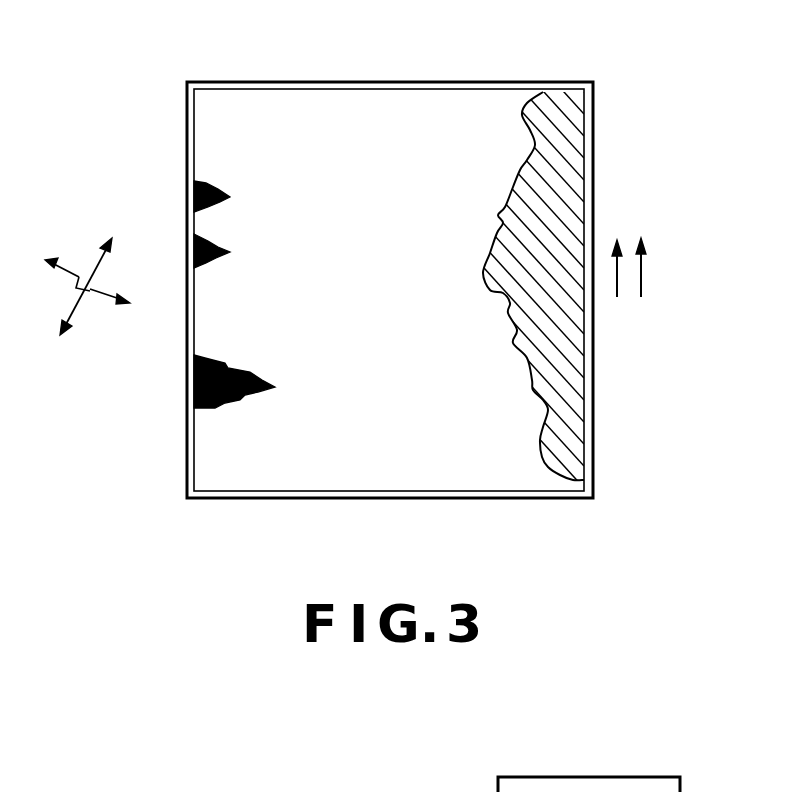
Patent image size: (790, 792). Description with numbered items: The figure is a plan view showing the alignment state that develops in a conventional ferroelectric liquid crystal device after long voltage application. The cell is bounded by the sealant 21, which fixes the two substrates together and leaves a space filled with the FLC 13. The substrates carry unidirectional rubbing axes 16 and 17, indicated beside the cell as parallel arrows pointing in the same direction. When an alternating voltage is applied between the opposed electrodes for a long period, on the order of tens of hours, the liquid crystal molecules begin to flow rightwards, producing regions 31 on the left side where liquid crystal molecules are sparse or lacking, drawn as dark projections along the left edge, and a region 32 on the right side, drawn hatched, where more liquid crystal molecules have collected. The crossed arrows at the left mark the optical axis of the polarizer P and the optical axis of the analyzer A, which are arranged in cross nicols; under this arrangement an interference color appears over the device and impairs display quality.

The FLC 13 is at (313, 112).
The sealant 21 is at (409, 88).
The regions with less or lacking liquid crystal molecules 31 is at (229, 198).
The region with more liquid crystal molecules 32 is at (563, 380).
The rubbing axis 16 is at (612, 270).
The rubbing axis 17 is at (645, 272).
The optical axis of an analyzer A is at (96, 282).
The optical axis of a polarizer P is at (87, 300).